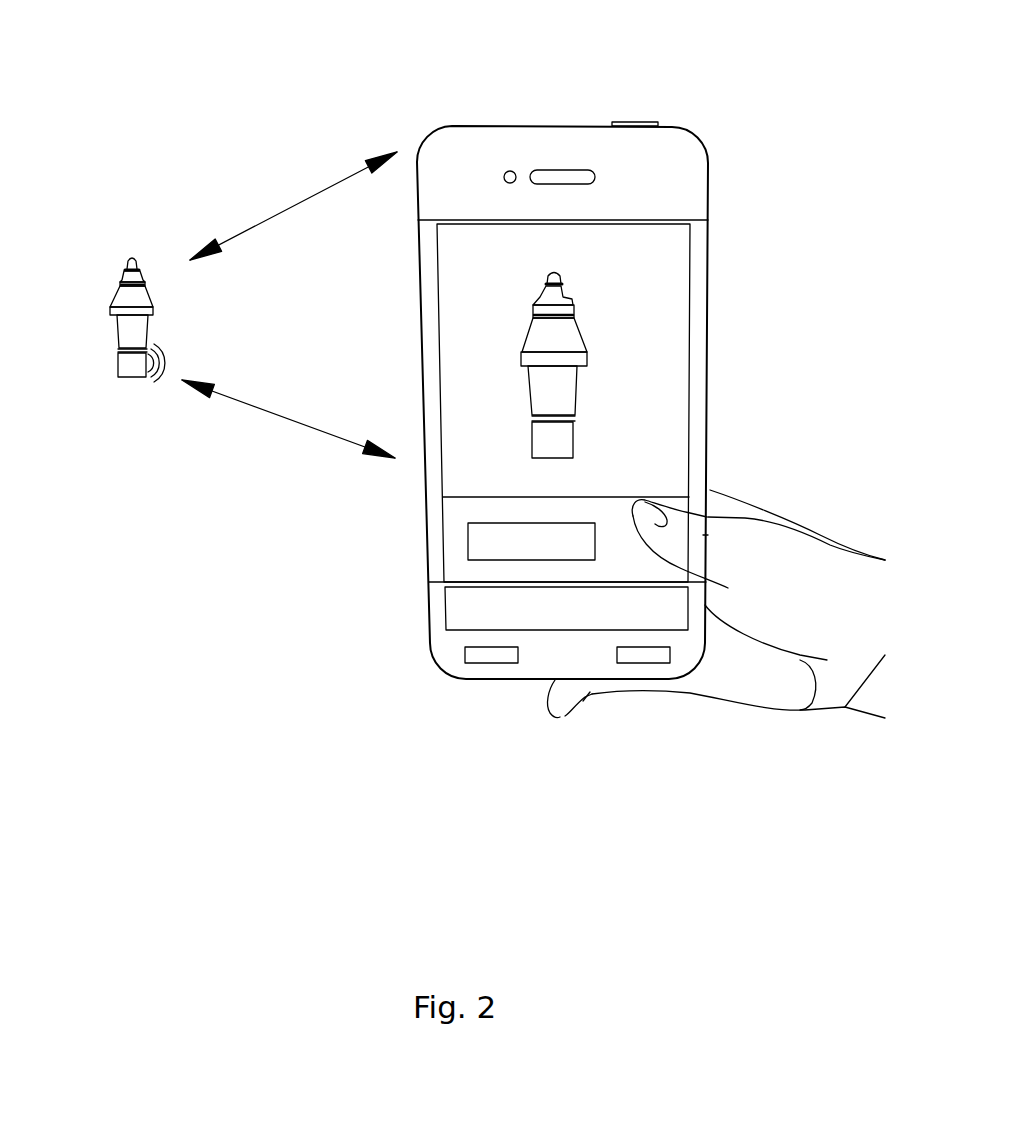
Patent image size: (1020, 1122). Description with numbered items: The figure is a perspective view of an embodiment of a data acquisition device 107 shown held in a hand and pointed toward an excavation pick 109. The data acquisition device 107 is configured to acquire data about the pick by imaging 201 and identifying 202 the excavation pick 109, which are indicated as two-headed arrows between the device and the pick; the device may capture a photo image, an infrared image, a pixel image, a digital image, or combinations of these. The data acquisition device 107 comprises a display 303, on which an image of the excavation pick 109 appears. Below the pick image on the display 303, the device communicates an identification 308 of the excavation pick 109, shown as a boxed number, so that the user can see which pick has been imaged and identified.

The data acquisition device 107 is at (647, 160).
The excavation pick 109 is at (130, 303).
The imaging 201 is at (293, 204).
The identifying 202 is at (290, 423).
The display 303 is at (657, 383).
The identification 308 is at (478, 553).